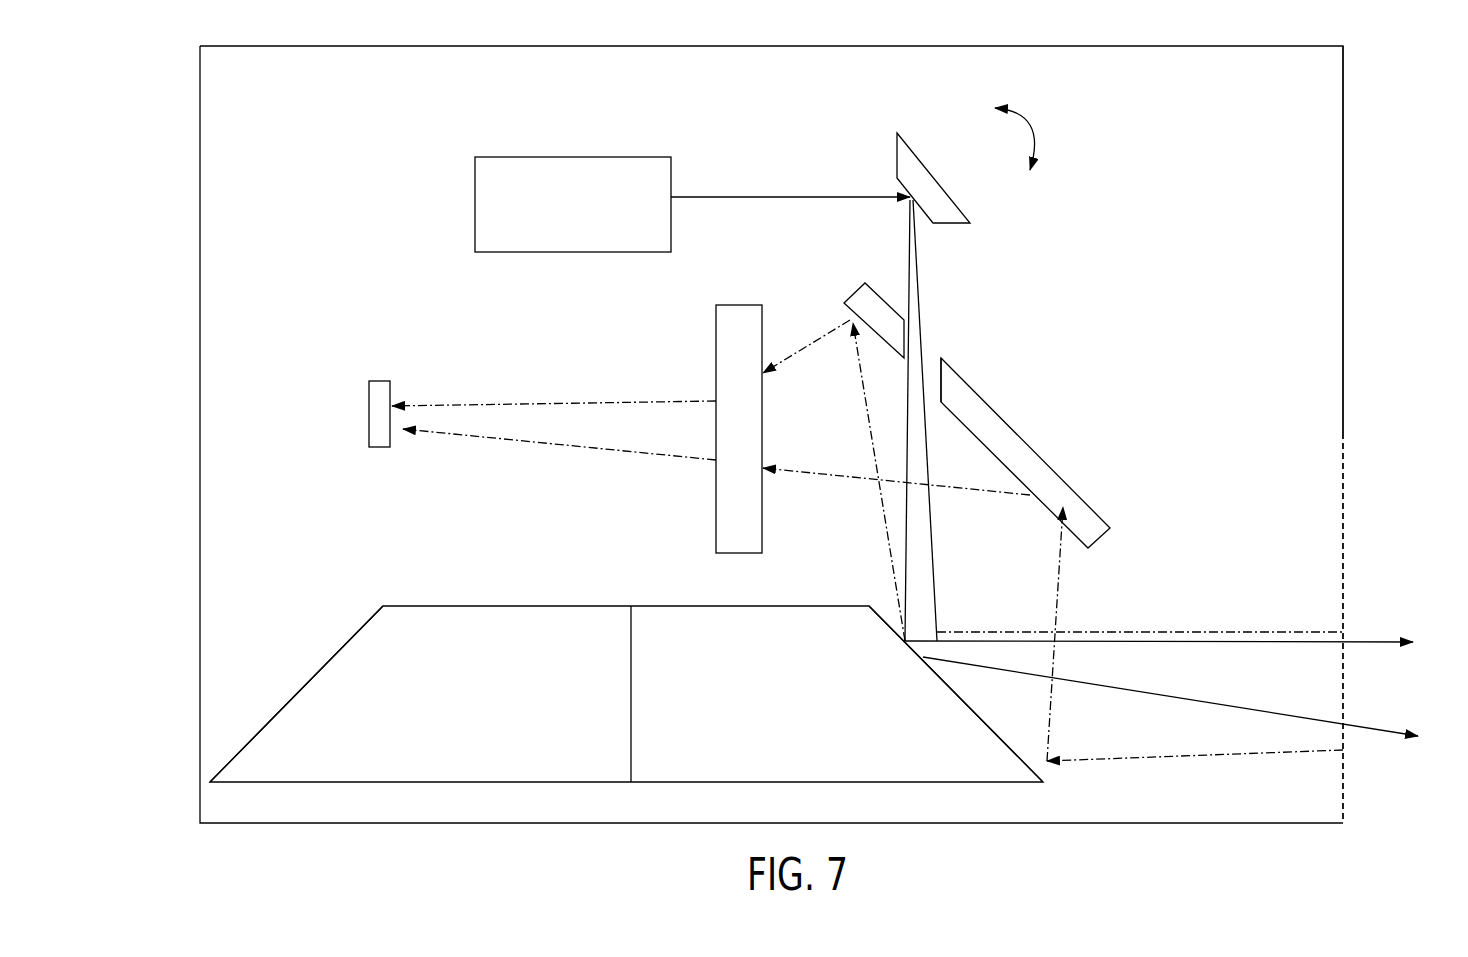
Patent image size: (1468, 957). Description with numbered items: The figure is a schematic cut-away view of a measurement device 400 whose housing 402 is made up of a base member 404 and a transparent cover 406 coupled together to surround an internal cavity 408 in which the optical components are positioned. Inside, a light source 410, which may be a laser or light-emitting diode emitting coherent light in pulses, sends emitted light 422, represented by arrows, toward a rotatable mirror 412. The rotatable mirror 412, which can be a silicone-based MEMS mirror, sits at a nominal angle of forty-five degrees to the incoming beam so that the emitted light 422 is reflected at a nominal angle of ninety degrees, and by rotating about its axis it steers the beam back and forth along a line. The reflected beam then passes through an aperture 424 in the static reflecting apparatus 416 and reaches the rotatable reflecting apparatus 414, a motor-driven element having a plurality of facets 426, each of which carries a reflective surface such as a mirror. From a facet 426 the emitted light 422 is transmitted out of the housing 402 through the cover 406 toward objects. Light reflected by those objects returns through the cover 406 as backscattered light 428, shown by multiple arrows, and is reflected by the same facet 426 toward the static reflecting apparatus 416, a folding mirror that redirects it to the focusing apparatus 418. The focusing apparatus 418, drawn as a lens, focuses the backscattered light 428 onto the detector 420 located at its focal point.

The measurement device 400 is at (146, 114).
The housing 402 is at (1413, 378).
The base member 404 is at (1343, 410).
The transparent cover 406 is at (1343, 452).
The internal cavity 408 is at (262, 113).
The light source 410 is at (580, 218).
The rotatable mirror 412 is at (925, 178).
The rotatable reflecting apparatus 414 is at (510, 606).
The static reflecting apparatus 416 is at (1012, 446).
The focusing apparatus 418 is at (757, 430).
The detector 420 is at (376, 380).
The emitted light 422 is at (773, 197).
The aperture 424 is at (938, 376).
The facet 426 is at (306, 682).
The backscattered light 428 is at (583, 452).